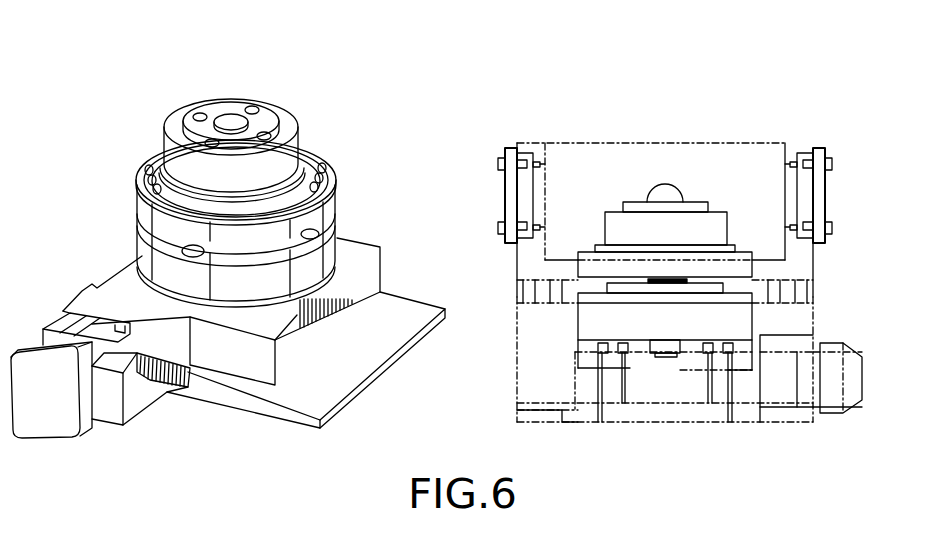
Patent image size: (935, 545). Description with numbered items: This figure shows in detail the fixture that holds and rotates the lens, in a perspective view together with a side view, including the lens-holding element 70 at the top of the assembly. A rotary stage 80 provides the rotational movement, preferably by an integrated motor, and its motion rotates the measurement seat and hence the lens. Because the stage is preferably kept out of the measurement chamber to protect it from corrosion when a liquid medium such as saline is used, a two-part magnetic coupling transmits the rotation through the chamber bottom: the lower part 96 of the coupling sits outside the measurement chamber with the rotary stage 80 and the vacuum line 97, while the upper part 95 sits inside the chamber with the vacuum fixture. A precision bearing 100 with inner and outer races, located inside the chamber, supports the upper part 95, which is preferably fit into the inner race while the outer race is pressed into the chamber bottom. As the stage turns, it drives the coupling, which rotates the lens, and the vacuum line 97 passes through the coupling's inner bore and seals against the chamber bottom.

The sample holder cap 70 is at (231, 121).
The rotary stage 80 is at (113, 272).
The upper part of magnetic coupling 95 is at (307, 141).
The lower part of magnetic coupling 96 is at (590, 313).
The vacuum line 97 is at (670, 357).
The bearing 100 is at (140, 172).